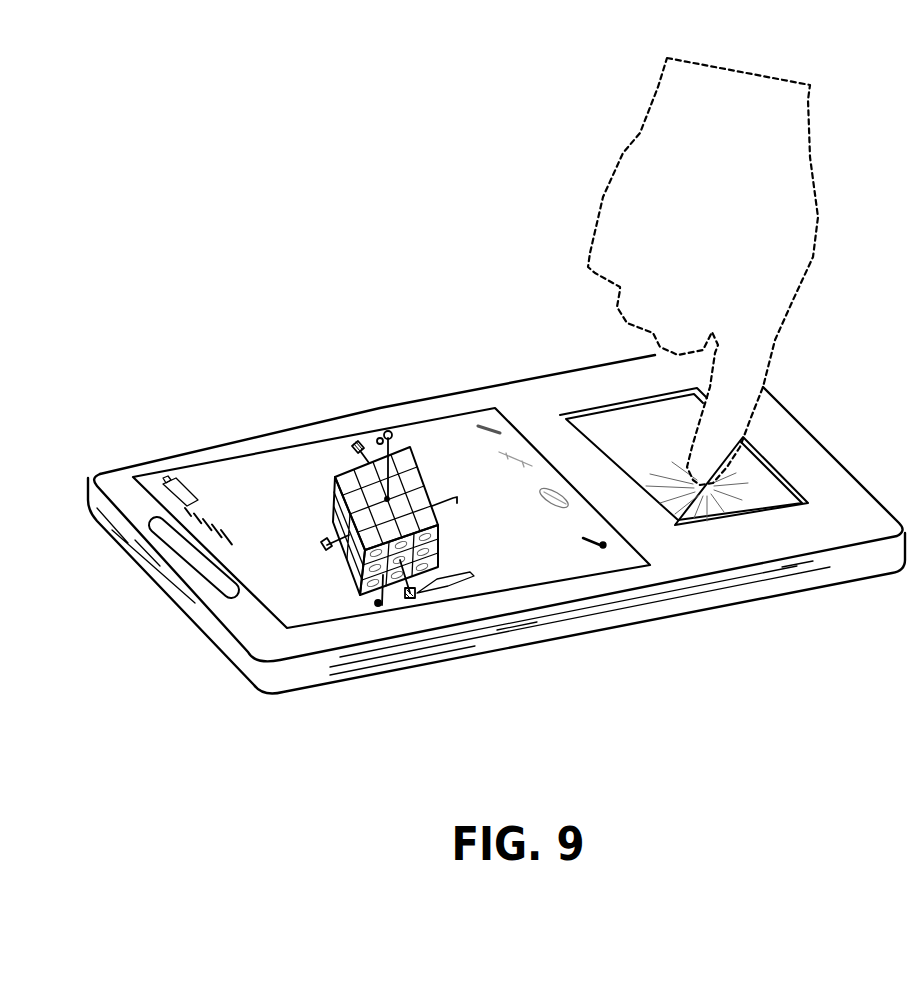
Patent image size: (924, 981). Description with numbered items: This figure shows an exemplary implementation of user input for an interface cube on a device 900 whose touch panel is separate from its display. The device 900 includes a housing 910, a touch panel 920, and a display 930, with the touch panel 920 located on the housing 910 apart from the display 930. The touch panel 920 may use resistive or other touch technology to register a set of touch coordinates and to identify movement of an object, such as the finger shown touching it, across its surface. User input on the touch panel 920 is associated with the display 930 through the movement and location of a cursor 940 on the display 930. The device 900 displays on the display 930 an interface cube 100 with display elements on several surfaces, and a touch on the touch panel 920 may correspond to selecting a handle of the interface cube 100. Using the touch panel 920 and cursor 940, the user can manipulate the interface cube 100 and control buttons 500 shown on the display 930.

The device 900 is at (214, 360).
The housing 910 is at (770, 393).
The touch panel 920 is at (768, 460).
The display 930 is at (440, 419).
The cursor 940 is at (457, 585).
The interface cube 100 is at (337, 475).
The control buttons 500 is at (603, 544).